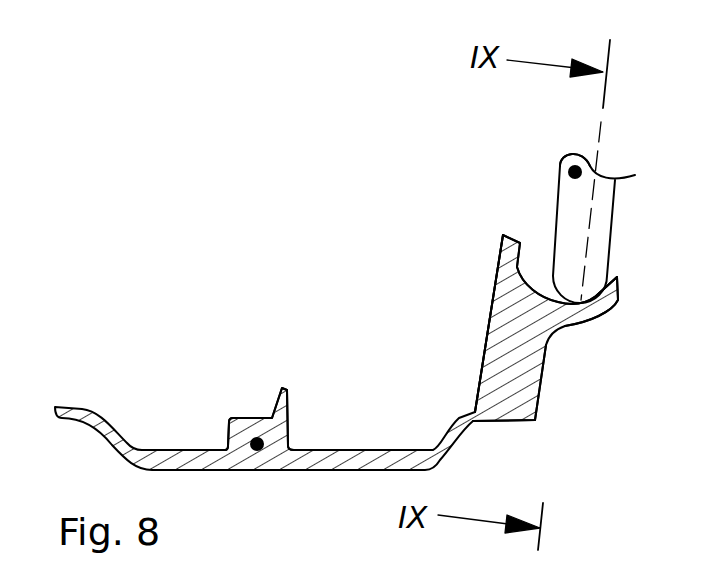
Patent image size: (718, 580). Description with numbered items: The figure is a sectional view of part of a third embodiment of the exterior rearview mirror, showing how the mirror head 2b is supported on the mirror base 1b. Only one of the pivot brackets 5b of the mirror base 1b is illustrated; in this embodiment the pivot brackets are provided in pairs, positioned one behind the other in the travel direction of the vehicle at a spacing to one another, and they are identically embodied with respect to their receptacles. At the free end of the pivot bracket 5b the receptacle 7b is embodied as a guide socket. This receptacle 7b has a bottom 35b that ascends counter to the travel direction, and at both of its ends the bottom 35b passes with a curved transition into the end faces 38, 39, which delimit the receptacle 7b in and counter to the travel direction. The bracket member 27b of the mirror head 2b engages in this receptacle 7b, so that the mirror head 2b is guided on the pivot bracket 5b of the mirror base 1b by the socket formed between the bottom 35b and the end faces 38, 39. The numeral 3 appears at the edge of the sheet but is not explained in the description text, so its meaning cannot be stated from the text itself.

The bracket 3 is at (386, 352).
The mirror base 1b is at (254, 440).
The mirror head 2b is at (624, 221).
The pivot bracket 5b is at (543, 368).
The receptacle 7b is at (537, 265).
The bracket member 27b is at (565, 163).
The bottom 35b is at (490, 318).
The end face 38 is at (500, 245).
The end face 39 is at (618, 298).